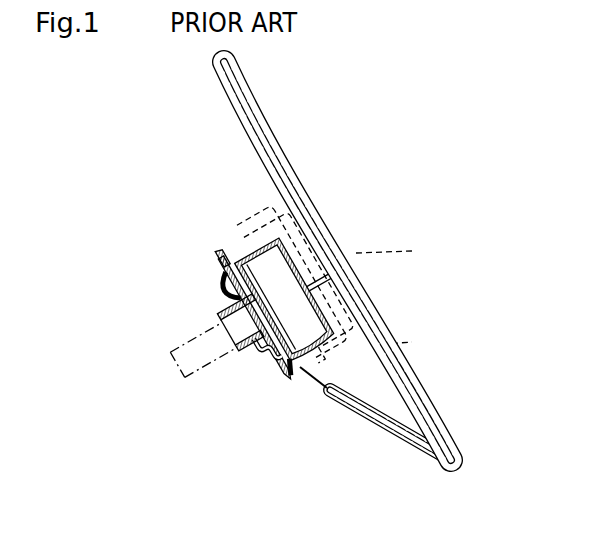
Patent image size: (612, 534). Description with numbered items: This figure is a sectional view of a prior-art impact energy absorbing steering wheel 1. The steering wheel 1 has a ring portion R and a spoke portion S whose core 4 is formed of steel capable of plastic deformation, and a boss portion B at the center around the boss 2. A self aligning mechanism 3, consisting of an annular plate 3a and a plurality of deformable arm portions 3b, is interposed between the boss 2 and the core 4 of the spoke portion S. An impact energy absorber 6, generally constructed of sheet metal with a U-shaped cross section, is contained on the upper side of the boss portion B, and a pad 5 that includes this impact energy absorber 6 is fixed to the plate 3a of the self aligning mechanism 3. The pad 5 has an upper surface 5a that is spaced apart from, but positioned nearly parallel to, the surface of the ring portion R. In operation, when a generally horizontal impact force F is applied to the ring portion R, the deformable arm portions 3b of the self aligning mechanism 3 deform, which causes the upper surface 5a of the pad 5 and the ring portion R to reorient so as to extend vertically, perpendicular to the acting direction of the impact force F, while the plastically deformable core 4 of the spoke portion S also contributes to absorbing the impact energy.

The steering wheel 1 is at (357, 74).
The boss 2 is at (221, 321).
The self aligning mechanism 3 is at (236, 212).
The annular plate 3a is at (233, 257).
The deformable arm portion 3b is at (220, 291).
The core of spoke portion 4 is at (311, 377).
The pad 5 is at (399, 347).
The upper surface of pad 5a is at (360, 252).
The impact energy absorber 6 is at (321, 300).
The ring portion R is at (320, 282).
The spoke portion S is at (373, 433).
The boss portion B is at (147, 356).
The impact force F is at (470, 457).